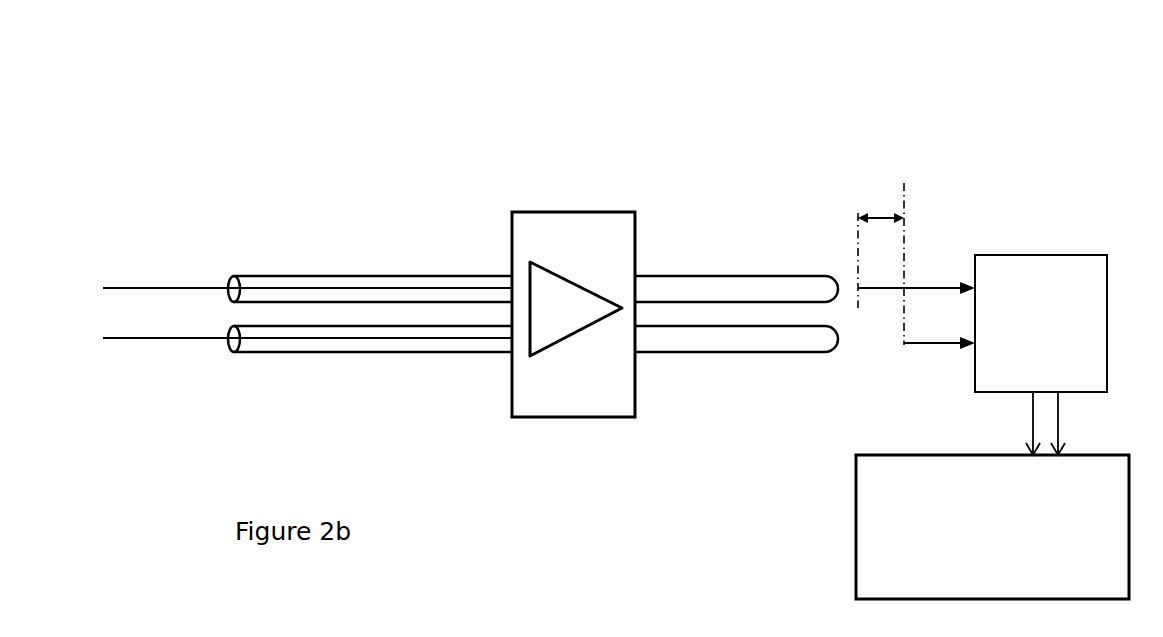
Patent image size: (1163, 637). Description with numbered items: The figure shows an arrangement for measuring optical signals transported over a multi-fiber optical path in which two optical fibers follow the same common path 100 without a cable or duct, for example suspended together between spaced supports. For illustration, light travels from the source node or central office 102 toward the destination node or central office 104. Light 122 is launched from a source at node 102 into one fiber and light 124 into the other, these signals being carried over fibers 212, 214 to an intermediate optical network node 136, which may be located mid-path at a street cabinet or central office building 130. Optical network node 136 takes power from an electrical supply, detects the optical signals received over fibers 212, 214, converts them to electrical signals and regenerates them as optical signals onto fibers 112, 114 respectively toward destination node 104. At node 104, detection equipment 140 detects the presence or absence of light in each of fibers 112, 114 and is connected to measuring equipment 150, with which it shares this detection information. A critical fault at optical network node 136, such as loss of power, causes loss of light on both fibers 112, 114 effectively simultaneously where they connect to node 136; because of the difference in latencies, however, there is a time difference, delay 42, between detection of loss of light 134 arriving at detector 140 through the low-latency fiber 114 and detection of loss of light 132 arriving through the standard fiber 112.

The central office 102 is at (121, 112).
The common path 100 is at (479, 164).
The central office 104 is at (857, 57).
The delay 42 is at (885, 216).
The light 122 is at (172, 288).
The light 124 is at (177, 340).
The fiber 212 is at (285, 276).
The fiber 214 is at (280, 353).
The central office building 130 is at (597, 395).
The optical network node 136 is at (580, 324).
The fiber 112 is at (763, 276).
The fiber 114 is at (757, 353).
The light 132 is at (916, 287).
The light 134 is at (932, 345).
The detection equipment 140 is at (1022, 353).
The measuring equipment 150 is at (967, 574).